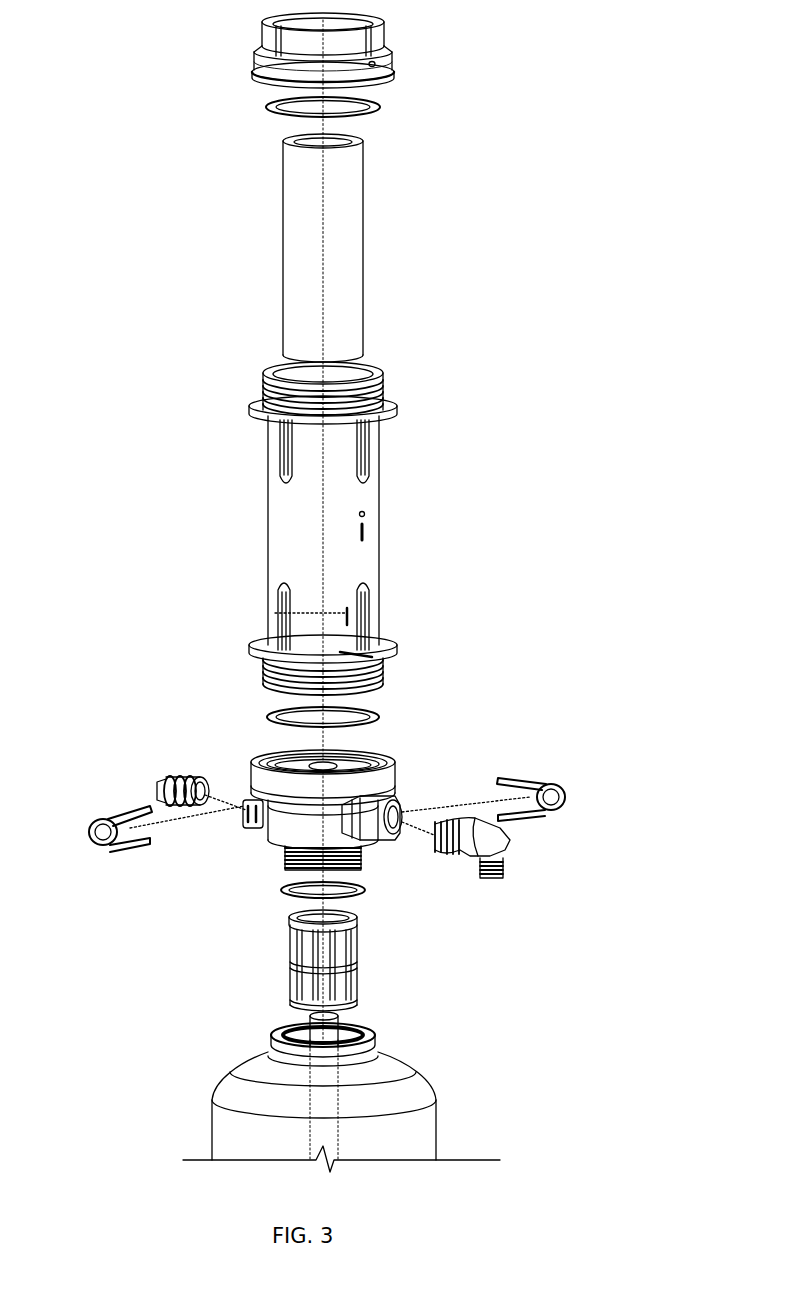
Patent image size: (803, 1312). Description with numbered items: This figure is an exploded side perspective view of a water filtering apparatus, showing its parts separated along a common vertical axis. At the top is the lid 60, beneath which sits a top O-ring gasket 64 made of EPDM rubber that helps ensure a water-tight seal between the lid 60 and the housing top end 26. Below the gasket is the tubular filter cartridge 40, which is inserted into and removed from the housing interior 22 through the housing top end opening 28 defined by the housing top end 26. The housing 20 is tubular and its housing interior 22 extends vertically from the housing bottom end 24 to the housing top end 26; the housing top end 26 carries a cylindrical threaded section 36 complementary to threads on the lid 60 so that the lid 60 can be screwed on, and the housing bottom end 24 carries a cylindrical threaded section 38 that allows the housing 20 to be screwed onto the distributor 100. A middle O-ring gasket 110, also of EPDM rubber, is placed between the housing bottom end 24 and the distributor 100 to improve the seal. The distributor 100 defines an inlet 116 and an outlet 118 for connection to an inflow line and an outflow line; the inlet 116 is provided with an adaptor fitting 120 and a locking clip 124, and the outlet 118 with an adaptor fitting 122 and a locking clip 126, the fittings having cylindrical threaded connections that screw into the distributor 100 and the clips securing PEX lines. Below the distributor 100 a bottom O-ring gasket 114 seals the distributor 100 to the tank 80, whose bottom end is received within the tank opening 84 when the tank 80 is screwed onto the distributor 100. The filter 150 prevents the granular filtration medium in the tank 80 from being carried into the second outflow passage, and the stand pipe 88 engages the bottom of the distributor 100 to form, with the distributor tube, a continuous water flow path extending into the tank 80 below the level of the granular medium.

The lid 60 is at (392, 47).
The top O-ring gasket 64 is at (379, 106).
The tubular filter cartridge 40 is at (356, 210).
The housing interior 22 is at (318, 383).
The housing top end opening 28 is at (345, 375).
The housing top end 26 is at (268, 378).
The cylindrical threaded section 36 is at (385, 390).
The housing 20 is at (371, 538).
The cylindrical threaded section 38 is at (390, 668).
The housing bottom end 24 is at (270, 682).
The middle O-ring gasket 110 is at (380, 718).
The distributor 100 is at (390, 774).
The inlet 116 is at (250, 818).
The outlet 118 is at (398, 838).
The adaptor fitting 120 is at (173, 768).
The locking clip 124 is at (112, 852).
The locking clip 126 is at (548, 779).
The adaptor fitting 122 is at (508, 848).
The bottom O-ring gasket 114 is at (366, 891).
The filter 150 is at (358, 966).
The stand pipe 88 is at (325, 1027).
The tank opening 84 is at (360, 1025).
The tank 80 is at (395, 1062).